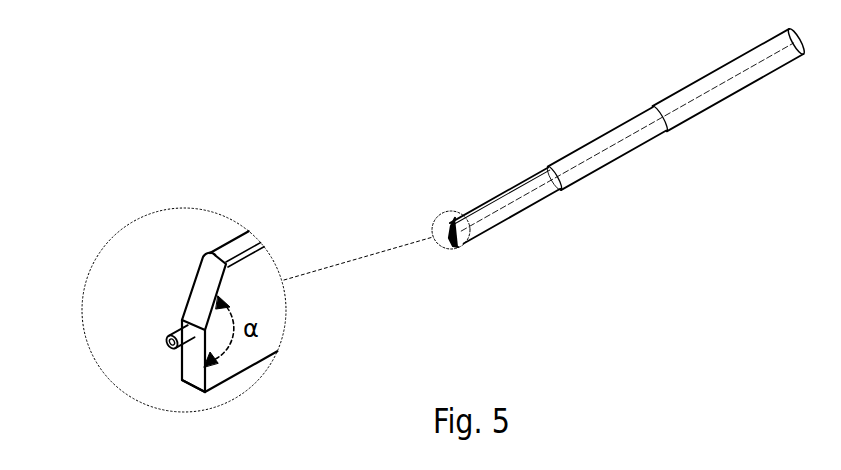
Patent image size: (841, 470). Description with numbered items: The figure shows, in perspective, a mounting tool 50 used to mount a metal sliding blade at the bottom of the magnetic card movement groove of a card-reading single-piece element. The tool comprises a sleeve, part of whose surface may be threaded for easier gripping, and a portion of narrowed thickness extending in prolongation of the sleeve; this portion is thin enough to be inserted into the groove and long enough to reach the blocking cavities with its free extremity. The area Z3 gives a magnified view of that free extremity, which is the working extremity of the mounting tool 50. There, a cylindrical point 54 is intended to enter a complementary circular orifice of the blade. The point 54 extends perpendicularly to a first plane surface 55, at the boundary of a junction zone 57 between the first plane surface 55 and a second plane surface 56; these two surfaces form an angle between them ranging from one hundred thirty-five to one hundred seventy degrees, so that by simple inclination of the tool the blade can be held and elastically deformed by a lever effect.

The mounting tool 50 is at (555, 133).
The point 54 is at (180, 363).
The first plane surface 55 is at (195, 373).
The second plane surface 56 is at (202, 290).
The junction zone 57 is at (188, 330).
The area Z3 is at (83, 328).